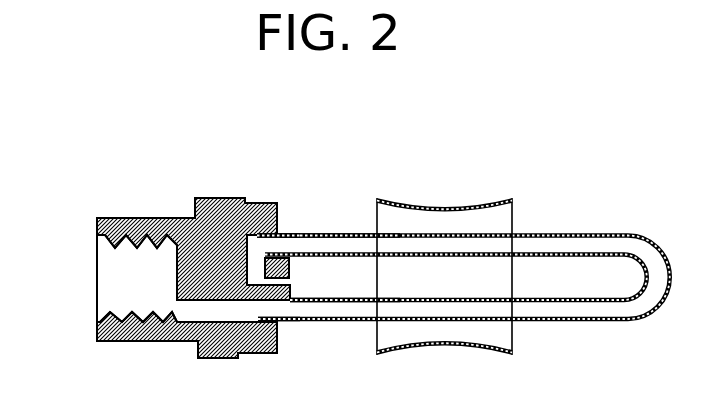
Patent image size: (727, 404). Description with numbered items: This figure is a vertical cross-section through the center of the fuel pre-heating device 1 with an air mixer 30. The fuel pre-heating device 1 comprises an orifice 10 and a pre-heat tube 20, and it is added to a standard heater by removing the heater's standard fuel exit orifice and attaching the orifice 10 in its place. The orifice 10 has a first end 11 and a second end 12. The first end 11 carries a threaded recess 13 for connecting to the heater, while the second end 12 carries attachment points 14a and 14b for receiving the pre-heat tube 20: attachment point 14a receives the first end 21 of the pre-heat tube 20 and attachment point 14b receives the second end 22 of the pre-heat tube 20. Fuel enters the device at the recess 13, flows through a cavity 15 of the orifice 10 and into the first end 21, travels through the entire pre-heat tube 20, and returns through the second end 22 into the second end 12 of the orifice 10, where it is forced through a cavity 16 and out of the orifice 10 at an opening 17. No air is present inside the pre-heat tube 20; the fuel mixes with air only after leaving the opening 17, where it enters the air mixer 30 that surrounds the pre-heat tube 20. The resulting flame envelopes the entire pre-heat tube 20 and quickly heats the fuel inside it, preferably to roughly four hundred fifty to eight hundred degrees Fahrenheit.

The fuel pre-heating device 1 is at (562, 163).
The orifice 10 is at (187, 221).
The first end 11 is at (97, 230).
The second end 12 is at (278, 232).
The threaded recess 13 is at (115, 277).
The attachment point 14a is at (273, 325).
The attachment point 14b is at (275, 240).
The cavity 15 is at (212, 308).
The cavity 16 is at (253, 252).
The opening 17 is at (290, 278).
The pre-heat tube 20 is at (641, 246).
The first end 21 is at (263, 308).
The second end 22 is at (281, 241).
The air mixer 30 is at (452, 219).